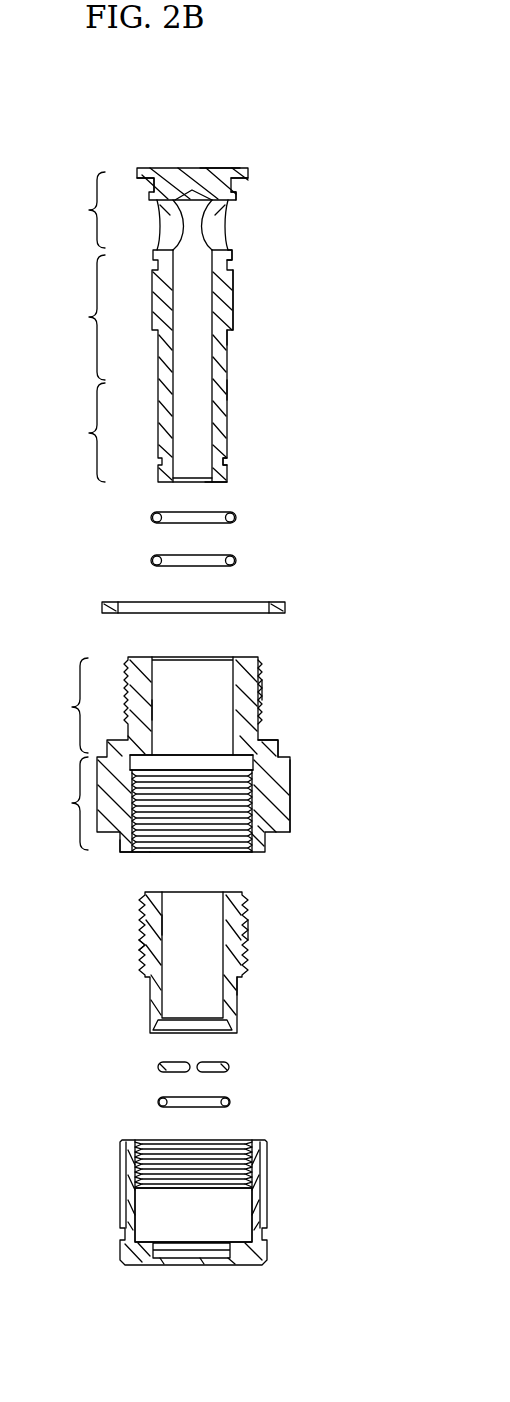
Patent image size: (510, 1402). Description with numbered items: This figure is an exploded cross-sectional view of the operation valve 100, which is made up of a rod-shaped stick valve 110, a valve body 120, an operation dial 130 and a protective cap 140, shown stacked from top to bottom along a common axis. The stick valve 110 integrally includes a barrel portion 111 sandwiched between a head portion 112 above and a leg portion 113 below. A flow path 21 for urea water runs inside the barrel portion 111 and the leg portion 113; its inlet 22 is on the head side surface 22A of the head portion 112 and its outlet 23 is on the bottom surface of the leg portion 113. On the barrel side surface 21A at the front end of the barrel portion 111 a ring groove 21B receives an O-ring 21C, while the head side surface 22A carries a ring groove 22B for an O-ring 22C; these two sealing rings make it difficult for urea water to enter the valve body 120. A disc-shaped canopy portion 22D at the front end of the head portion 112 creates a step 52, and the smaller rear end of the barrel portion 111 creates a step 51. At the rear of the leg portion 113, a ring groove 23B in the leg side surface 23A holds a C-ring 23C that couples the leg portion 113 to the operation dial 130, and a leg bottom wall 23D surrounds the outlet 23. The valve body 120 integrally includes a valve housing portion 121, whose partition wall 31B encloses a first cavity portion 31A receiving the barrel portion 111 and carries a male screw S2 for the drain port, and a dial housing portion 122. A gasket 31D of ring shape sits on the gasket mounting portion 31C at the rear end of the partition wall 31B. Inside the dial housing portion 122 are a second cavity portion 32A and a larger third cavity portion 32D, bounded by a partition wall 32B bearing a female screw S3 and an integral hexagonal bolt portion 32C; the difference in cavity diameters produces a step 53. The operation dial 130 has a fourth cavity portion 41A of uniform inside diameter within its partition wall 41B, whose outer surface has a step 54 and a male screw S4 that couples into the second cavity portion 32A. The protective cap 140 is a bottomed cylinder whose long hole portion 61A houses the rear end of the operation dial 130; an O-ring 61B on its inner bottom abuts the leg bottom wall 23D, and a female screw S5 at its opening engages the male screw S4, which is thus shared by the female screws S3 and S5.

The operation valve 100 is at (296, 132).
The stick valve 110 is at (231, 189).
The barrel portion 111 is at (63, 317).
The head portion 112 is at (63, 210).
The leg portion 113 is at (63, 432).
The valve body 120 is at (209, 742).
The valve housing portion 121 is at (54, 705).
The dial housing portion 122 is at (54, 803).
The operation dial 130 is at (192, 968).
The protective cap 140 is at (187, 1202).
The flow path 21 is at (235, 380).
The barrel side surface 21A is at (236, 322).
The ring groove 21B is at (234, 263).
The O-ring 21C is at (238, 560).
The inlet 22 is at (219, 232).
The head side surface 22A is at (236, 187).
The ring groove 22B is at (232, 196).
The O-ring 22C is at (238, 517).
The canopy portion 22D is at (232, 166).
The outlet 23 is at (217, 422).
The leg side surface 23A is at (229, 393).
The ring groove 23B is at (228, 461).
The C-ring 23C is at (231, 1067).
The leg bottom wall 23D is at (222, 483).
The first cavity portion 31A is at (198, 687).
The partition wall 31B is at (258, 672).
The gasket mounting portion 31C is at (276, 742).
The gasket 31D is at (287, 607).
The second cavity portion 32A is at (208, 853).
The partition wall 32B is at (122, 849).
The bolt portion 32C is at (280, 830).
The third cavity portion 32D is at (178, 767).
The fourth cavity portion 41A is at (180, 927).
The partition wall 41B is at (140, 958).
The step 51 is at (230, 331).
The step 52 is at (146, 180).
The step 53 is at (254, 758).
The step 54 is at (241, 972).
The long hole portion 61A is at (233, 1202).
The O-ring 61B is at (158, 1101).
The male screw S2 is at (262, 686).
The female screw S3 is at (254, 806).
The male screw S4 is at (250, 930).
The female screw S5 is at (265, 1163).